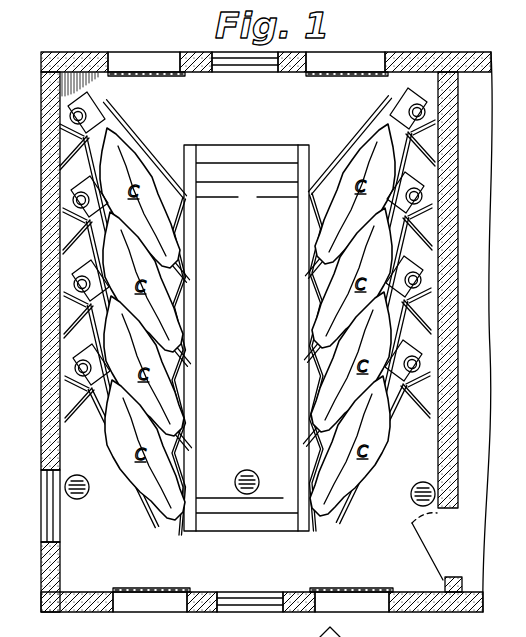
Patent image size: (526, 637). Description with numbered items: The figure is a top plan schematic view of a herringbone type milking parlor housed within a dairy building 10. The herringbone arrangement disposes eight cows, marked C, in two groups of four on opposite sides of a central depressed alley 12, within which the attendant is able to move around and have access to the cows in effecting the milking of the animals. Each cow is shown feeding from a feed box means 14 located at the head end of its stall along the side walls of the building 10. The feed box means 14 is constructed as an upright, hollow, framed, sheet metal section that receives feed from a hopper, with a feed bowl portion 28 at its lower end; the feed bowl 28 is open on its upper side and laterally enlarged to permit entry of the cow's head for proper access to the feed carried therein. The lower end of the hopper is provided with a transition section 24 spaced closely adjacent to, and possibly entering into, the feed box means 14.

The dairy building 10 is at (398, 51).
The central depressed alley 12 is at (249, 181).
The feed box means 14 is at (69, 116).
The transition section 24 is at (88, 106).
The feed bowl portion 28 is at (105, 118).